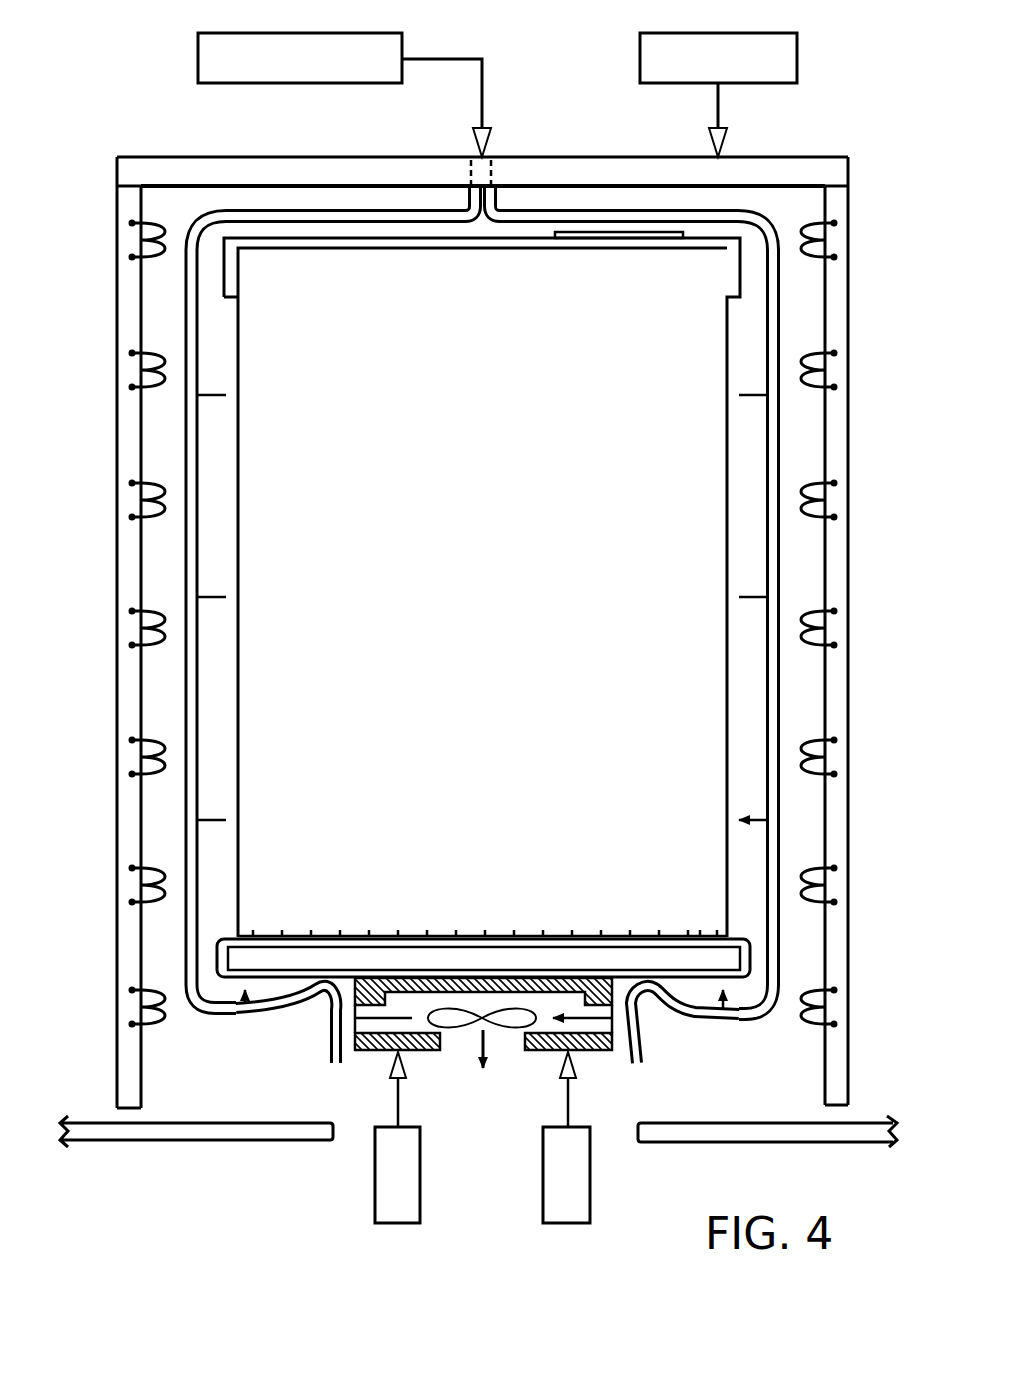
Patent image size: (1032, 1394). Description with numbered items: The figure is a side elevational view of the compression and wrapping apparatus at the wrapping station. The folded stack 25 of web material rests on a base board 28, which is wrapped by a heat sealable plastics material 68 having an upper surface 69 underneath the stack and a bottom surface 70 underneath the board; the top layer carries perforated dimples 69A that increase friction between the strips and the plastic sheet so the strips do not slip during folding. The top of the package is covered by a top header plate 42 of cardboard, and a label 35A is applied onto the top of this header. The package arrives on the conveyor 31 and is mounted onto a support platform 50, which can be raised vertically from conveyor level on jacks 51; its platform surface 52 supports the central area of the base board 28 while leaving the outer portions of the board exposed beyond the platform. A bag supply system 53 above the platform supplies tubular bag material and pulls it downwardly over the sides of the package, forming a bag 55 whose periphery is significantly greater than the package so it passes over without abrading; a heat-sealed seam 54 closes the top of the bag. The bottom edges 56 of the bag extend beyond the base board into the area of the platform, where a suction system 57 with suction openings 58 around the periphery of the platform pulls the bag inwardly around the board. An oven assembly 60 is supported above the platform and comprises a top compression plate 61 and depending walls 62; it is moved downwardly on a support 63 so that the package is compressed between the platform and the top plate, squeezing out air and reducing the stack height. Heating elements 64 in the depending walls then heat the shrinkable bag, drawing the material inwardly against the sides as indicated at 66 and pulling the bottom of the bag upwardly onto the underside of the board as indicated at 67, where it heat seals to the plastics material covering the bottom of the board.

The folded stack 25 is at (462, 643).
The base board 28 is at (354, 950).
The conveyor 31 is at (222, 1146).
The label 35A is at (618, 232).
The top header plate 42 is at (422, 243).
The support platform 50 is at (463, 971).
The jacks 51 is at (397, 1176).
The platform surface 52 is at (537, 972).
The bag supply system 53 is at (253, 28).
The seam 54 is at (487, 196).
The bag 55 is at (180, 540).
The bottom edges 56 is at (320, 1060).
The suction system 57 is at (596, 1064).
The suction openings 58 is at (374, 1046).
The oven assembly 60 is at (441, 583).
The top compression plate 61 is at (350, 172).
The depending walls 62 is at (118, 433).
The support 63 is at (800, 52).
The heating elements 64 is at (152, 648).
The inward drawing of bag material 66 is at (215, 603).
The upward pull of bag bottom 67 is at (228, 1005).
The heat sealable plastics material 68 is at (411, 926).
The upper surface 69 is at (445, 930).
The perforated dimples 69A is at (684, 928).
The bottom surface 70 is at (695, 988).